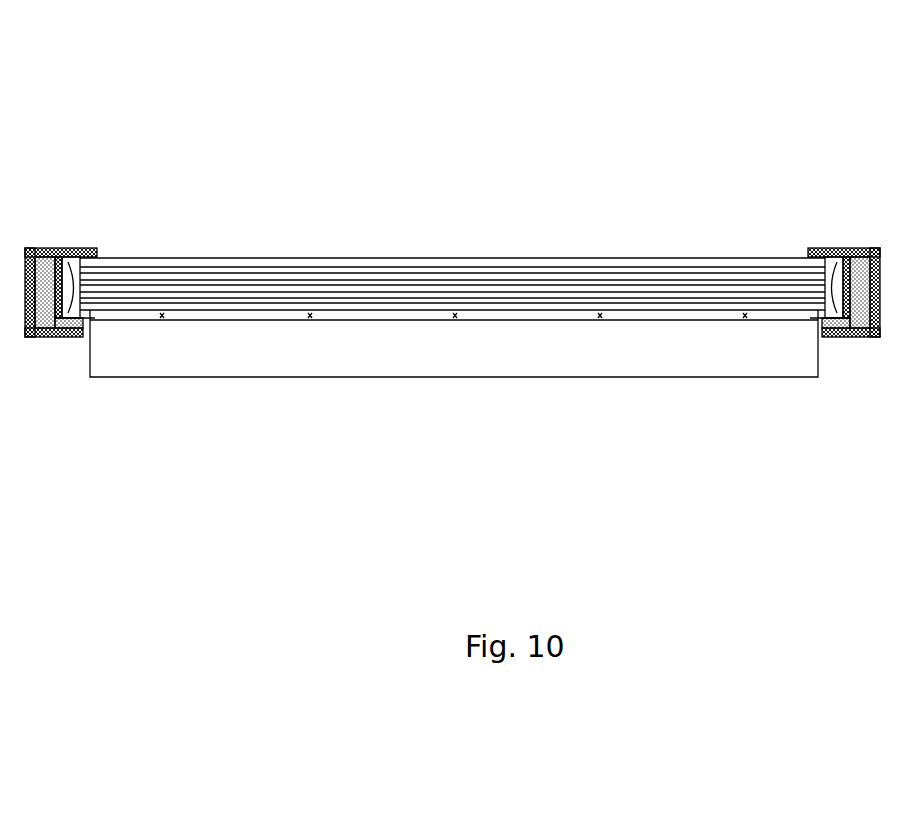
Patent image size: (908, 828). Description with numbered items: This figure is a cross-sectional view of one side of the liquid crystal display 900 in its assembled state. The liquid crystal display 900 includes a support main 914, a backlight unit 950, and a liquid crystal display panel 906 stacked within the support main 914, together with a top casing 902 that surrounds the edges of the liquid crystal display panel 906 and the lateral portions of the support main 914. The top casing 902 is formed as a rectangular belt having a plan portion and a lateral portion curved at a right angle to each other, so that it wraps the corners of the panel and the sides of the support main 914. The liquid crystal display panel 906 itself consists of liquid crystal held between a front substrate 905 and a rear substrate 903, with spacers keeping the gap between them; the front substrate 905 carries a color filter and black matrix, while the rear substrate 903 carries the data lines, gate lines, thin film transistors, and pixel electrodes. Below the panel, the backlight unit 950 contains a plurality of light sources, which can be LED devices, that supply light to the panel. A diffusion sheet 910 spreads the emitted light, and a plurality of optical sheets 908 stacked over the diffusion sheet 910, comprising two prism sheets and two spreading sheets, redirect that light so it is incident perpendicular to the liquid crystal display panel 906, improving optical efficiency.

The liquid crystal display 900 is at (458, 238).
The top casing 902 is at (55, 247).
The rear substrate 903 is at (325, 267).
The front substrate 905 is at (263, 258).
The liquid crystal display panel 906 is at (350, 183).
The optical sheets 908 is at (525, 300).
The diffusion sheet 910 is at (652, 308).
The support main 914 is at (858, 248).
The backlight unit 950 is at (454, 343).